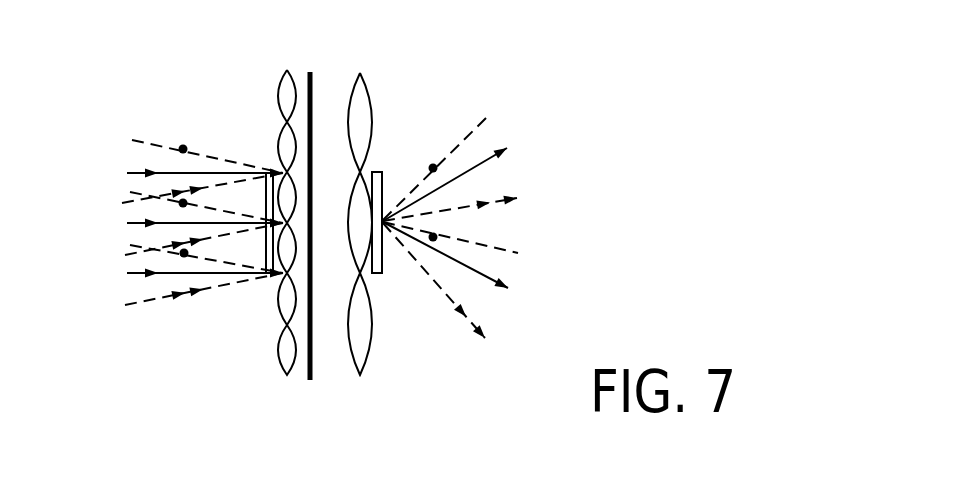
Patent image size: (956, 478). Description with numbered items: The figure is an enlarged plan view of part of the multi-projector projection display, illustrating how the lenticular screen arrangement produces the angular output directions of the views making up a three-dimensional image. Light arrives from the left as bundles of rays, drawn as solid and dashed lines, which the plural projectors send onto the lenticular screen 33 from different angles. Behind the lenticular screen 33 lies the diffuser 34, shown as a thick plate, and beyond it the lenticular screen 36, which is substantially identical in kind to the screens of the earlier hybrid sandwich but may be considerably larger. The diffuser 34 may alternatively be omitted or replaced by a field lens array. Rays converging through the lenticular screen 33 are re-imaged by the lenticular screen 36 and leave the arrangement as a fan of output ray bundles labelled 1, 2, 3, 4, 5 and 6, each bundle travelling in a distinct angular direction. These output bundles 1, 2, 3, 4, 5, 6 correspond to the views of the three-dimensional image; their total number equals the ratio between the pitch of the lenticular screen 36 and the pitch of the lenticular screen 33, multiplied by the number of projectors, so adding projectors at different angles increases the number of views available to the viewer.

The first output light ray 1 is at (439, 159).
The second output light ray 2 is at (454, 178).
The third output light ray 3 is at (459, 204).
The fourth output light ray 4 is at (460, 246).
The fifth output light ray 5 is at (456, 266).
The sixth output light ray 6 is at (443, 287).
The lenticular screen 33 is at (288, 375).
The diffuser 34 is at (310, 380).
The lenticular screen 36 is at (362, 375).